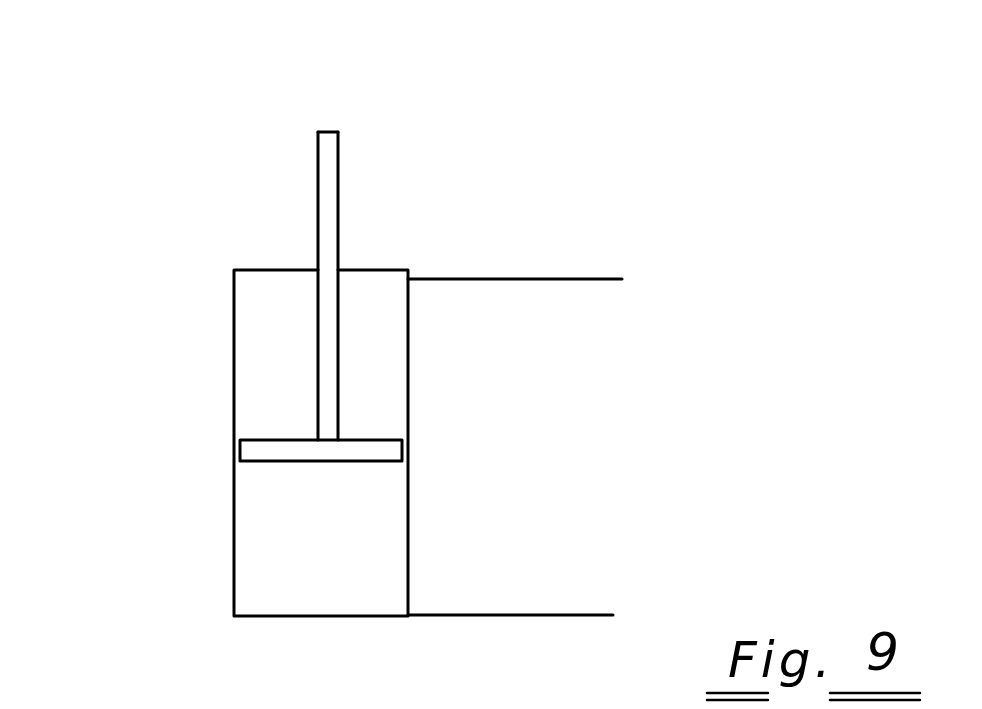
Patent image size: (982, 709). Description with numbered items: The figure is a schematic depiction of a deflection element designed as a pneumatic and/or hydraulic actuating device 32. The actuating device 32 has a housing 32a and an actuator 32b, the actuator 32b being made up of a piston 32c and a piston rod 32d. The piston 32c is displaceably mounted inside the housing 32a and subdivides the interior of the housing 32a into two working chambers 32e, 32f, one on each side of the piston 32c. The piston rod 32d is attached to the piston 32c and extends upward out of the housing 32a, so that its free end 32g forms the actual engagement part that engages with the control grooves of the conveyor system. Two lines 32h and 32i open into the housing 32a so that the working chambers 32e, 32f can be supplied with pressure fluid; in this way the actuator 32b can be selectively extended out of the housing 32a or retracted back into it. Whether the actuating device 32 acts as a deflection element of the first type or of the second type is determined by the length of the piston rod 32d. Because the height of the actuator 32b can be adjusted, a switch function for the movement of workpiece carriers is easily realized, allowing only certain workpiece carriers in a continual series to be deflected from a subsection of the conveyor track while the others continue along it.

The actuating device 32 is at (618, 147).
The housing 32a is at (409, 345).
The actuator 32b is at (211, 186).
The piston 32c is at (262, 447).
The piston rod 32d is at (329, 165).
The working chamber 32e is at (385, 402).
The working chamber 32f is at (385, 518).
The free end 32g is at (318, 132).
The line 32h is at (557, 279).
The line 32i is at (558, 615).